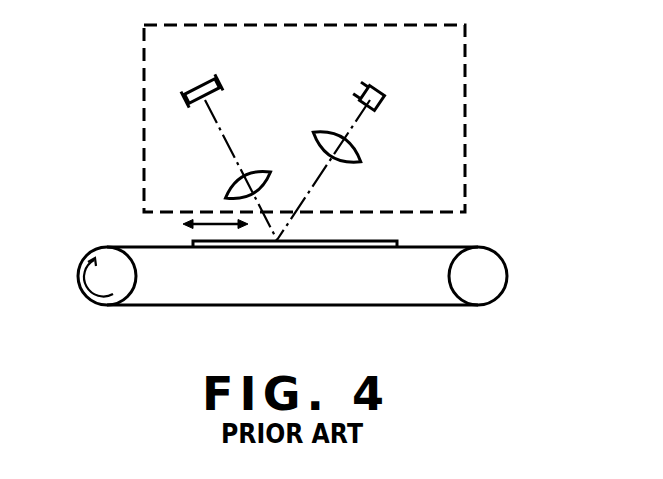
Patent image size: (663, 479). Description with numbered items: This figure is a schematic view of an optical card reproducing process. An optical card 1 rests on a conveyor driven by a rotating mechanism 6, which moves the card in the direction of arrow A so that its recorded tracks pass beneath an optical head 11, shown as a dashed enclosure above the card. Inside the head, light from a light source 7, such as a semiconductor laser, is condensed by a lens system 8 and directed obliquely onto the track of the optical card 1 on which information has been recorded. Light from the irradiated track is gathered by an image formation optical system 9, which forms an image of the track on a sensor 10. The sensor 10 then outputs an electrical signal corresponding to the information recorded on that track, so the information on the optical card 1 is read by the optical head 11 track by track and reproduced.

The optical card 1 is at (397, 242).
The rotating mechanism 6 is at (113, 292).
The light source 7 is at (388, 106).
The lens system 8 is at (360, 155).
The image formation optical system 9 is at (255, 166).
The sensor 10 is at (196, 82).
The optical head 11 is at (465, 125).
The direction of card movement A is at (207, 231).